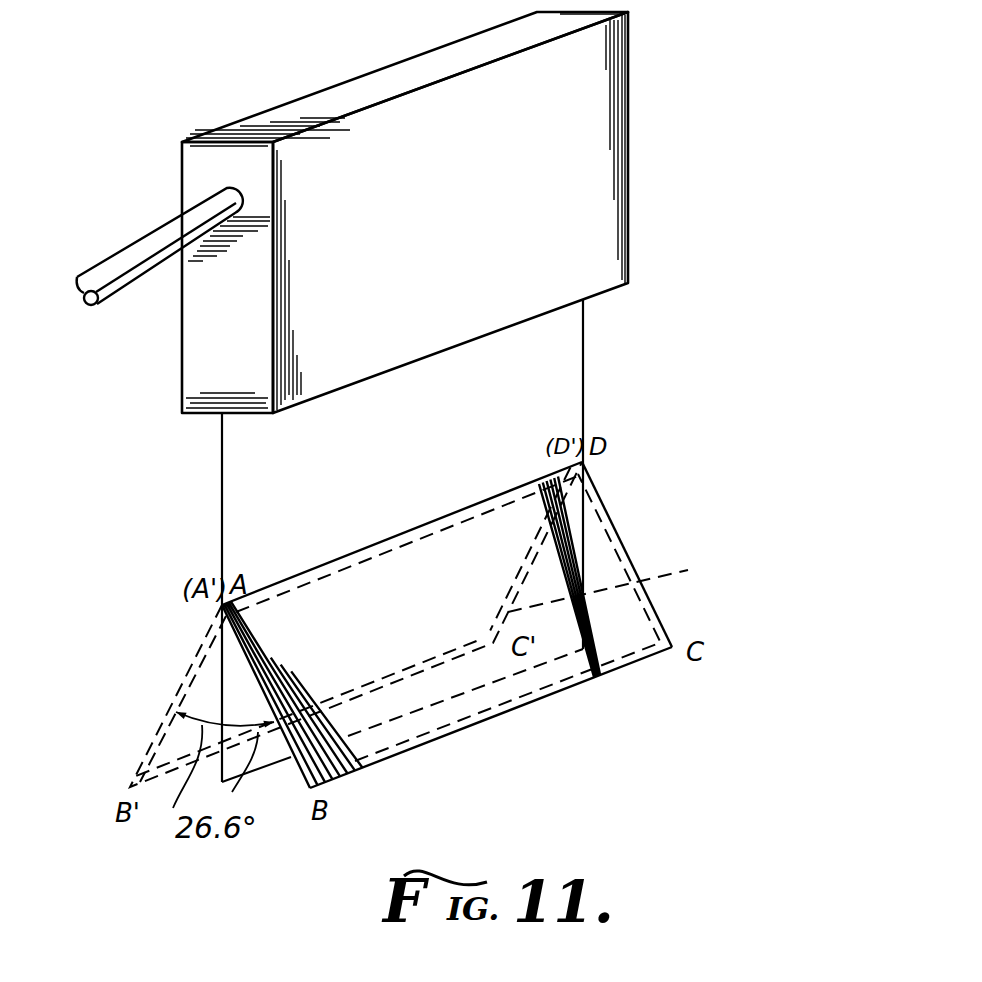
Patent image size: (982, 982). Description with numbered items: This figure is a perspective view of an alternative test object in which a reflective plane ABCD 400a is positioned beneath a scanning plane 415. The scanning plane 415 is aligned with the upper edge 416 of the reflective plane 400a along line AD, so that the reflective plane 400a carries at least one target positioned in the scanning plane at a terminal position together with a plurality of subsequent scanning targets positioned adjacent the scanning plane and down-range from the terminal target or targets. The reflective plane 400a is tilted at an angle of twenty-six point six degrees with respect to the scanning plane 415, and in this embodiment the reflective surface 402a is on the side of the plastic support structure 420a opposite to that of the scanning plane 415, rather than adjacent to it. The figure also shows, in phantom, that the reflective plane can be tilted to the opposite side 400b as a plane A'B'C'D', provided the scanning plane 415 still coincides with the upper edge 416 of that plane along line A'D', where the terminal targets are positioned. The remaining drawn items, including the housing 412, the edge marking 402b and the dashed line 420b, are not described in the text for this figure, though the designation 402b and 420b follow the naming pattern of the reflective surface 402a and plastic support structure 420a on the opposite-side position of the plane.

The housing 412 is at (597, 183).
The scanning plane 415 is at (570, 423).
The upper edge of the reflective plane 416 is at (422, 527).
The reflective plane ABCD 400a is at (706, 486).
The reflective plane tilted to the opposite side 400b is at (160, 677).
The reflective surface 402a is at (548, 573).
The panel member 402b is at (495, 527).
The plastic support structure 420a is at (657, 612).
The fold line 420b is at (638, 583).